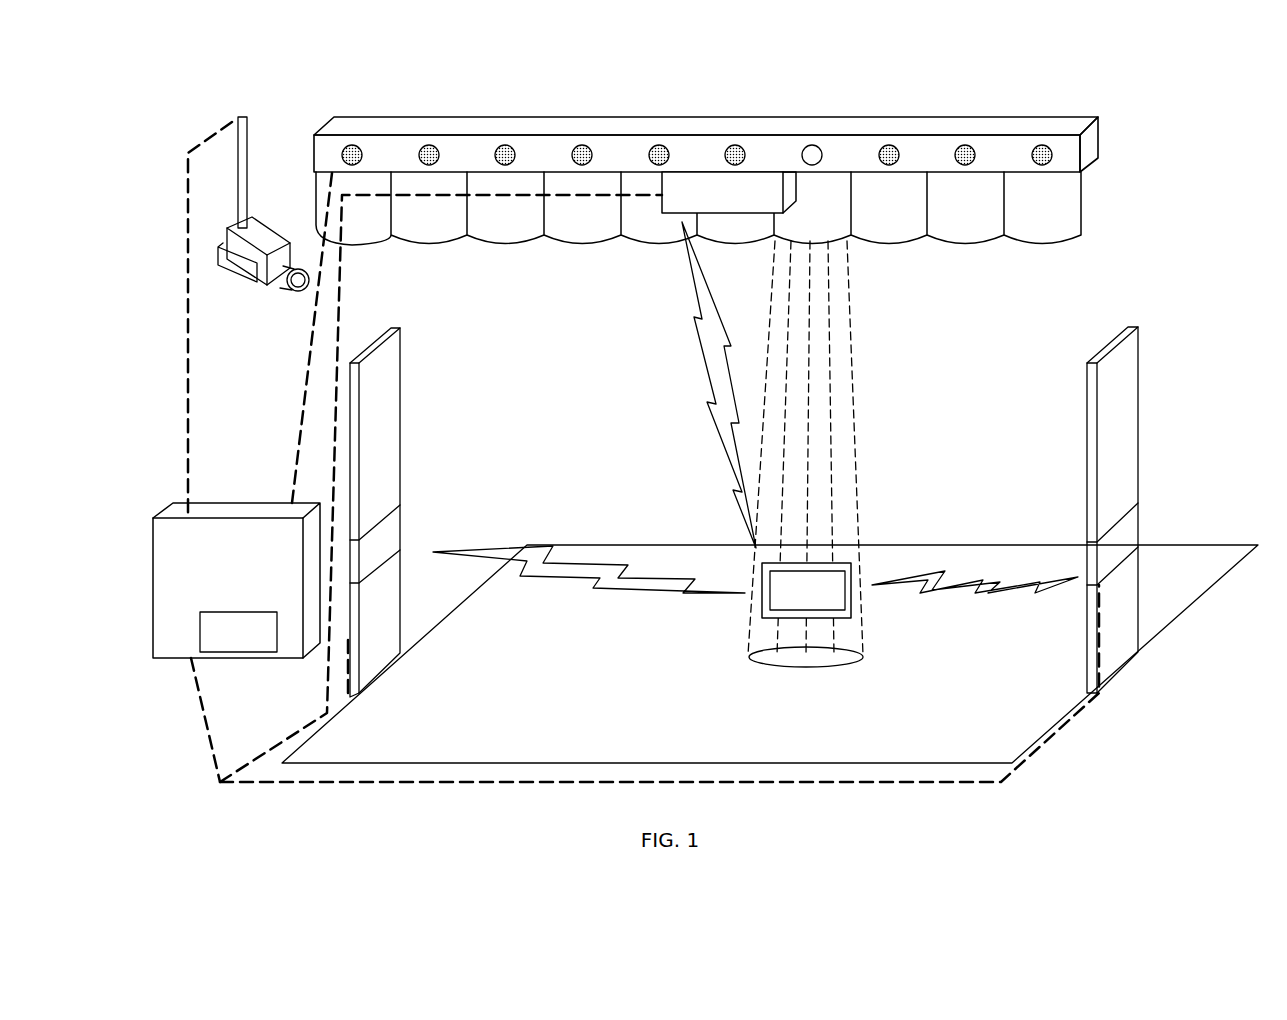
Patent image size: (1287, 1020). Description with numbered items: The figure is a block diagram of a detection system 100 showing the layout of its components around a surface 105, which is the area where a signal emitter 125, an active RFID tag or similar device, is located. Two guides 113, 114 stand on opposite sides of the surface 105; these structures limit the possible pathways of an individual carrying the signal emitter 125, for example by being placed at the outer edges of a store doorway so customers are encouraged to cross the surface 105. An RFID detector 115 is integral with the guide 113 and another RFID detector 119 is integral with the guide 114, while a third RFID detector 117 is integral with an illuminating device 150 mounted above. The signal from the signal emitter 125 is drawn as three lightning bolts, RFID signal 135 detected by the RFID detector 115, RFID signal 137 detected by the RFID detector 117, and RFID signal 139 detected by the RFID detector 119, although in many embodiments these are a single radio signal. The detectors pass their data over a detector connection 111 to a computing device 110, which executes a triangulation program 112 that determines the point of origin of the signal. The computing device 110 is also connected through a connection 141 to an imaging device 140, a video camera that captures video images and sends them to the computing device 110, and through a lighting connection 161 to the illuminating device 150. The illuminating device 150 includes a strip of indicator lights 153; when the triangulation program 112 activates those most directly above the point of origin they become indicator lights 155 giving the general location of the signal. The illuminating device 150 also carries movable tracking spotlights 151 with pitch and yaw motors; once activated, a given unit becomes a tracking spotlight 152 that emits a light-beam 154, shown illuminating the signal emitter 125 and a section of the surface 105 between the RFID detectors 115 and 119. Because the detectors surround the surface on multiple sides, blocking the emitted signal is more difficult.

The detection system 100 is at (1124, 72).
The surface 105 is at (961, 730).
The computing device 110 is at (236, 580).
The detector connection 111 is at (390, 784).
The triangulation program 112 is at (238, 632).
The guide 113 is at (383, 445).
The guide 114 is at (1127, 598).
The RFID detector 115 is at (390, 528).
The RFID detector 117 is at (740, 204).
The RFID detector 119 is at (1090, 552).
The signal emitter 125 is at (806, 590).
The RFID signal 135 is at (585, 570).
The RFID signal 137 is at (701, 373).
The RFID signal 139 is at (975, 577).
The imaging device 140 is at (250, 278).
The connection 141 is at (186, 306).
The illuminating device 150 is at (307, 138).
The tracking spotlights 151 is at (1088, 177).
The tracking spotlights 152 is at (833, 236).
The indicator lights 153 is at (1115, 117).
The light-beams 154 is at (830, 660).
The indicator lights 155 is at (815, 145).
The lighting connection 161 is at (301, 420).